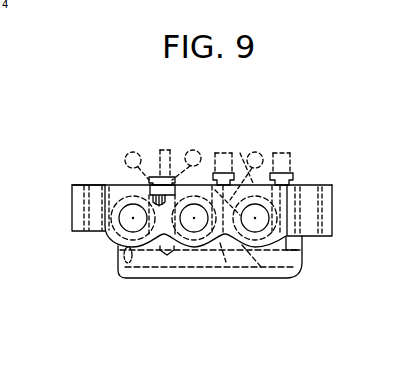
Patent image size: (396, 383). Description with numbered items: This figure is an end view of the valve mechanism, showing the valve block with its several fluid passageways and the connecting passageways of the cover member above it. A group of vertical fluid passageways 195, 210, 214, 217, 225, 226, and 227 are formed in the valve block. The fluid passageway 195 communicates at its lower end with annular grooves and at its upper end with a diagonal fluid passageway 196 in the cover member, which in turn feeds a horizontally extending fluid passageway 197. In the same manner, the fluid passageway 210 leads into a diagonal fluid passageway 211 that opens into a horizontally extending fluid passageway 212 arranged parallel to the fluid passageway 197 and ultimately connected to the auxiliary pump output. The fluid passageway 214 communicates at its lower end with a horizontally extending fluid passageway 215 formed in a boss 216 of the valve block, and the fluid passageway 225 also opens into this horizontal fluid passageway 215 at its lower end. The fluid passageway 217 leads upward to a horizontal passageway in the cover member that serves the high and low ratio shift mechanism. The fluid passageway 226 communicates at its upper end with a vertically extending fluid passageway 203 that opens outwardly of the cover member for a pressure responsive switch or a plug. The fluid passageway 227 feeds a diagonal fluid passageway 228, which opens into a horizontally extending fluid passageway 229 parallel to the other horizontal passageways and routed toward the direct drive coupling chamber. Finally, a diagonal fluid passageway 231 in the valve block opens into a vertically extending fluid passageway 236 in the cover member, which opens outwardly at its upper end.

The vertical fluid passageway 195 is at (143, 185).
The diagonal fluid passageway 196 is at (135, 176).
The horizontally extending fluid passageway 197 is at (150, 176).
The vertically extending fluid passageway 203 is at (285, 165).
The vertical fluid passageway 210 is at (160, 178).
The diagonal fluid passageway 211 is at (166, 183).
The horizontally extending fluid passageway 212 is at (193, 150).
The vertical fluid passageway 214 is at (116, 243).
The horizontally extending fluid passageway 215 is at (140, 268).
The boss 216 is at (180, 272).
The vertical fluid passageway 217 is at (226, 262).
The vertical fluid passageway 225 is at (303, 248).
The vertical fluid passageway 226 is at (292, 182).
The vertical fluid passageway 227 is at (262, 268).
The diagonal fluid passageway 228 is at (230, 170).
The horizontally extending fluid passageway 229 is at (272, 160).
The diagonal fluid passageway 231 is at (283, 160).
The vertically extending fluid passageway 236 is at (222, 150).